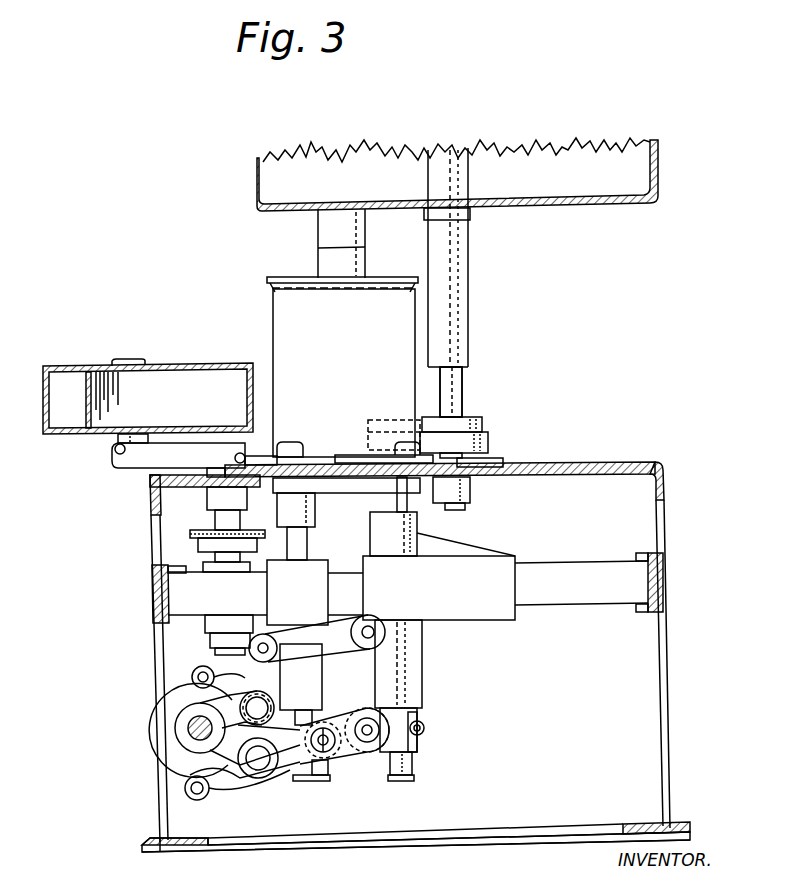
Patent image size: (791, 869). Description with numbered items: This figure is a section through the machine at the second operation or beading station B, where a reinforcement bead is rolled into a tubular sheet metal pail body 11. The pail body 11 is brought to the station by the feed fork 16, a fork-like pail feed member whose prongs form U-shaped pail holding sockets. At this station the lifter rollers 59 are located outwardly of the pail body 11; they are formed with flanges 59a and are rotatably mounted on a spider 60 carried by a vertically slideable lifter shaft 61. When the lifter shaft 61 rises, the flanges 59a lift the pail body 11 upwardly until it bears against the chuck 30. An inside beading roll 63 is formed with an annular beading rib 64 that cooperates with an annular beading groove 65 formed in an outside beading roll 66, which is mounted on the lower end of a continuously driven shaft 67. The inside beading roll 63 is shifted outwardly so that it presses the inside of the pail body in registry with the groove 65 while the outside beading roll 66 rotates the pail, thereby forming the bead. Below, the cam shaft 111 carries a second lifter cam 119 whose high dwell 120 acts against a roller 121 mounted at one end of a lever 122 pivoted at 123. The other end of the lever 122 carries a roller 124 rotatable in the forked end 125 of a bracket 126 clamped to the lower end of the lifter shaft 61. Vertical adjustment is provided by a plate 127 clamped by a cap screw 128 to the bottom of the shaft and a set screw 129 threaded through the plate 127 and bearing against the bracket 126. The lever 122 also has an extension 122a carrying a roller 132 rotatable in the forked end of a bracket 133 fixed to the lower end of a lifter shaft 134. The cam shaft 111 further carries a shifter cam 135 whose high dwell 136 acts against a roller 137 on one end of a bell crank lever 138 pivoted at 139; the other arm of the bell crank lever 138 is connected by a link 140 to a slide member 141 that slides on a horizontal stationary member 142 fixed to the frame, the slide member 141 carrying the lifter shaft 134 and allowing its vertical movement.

The second operation station B is at (190, 308).
The pail body 11 is at (318, 365).
The feed fork 16 is at (74, 360).
The chuck 30 is at (375, 277).
The lifter rollers 59 is at (292, 444).
The flanges 59a is at (350, 455).
The spider 60 is at (330, 496).
The lifter shaft 61 is at (308, 548).
The inside beading roll 63 is at (375, 419).
The annular beading rib 64 is at (397, 430).
The annular beading groove 65 is at (484, 425).
The outside beading roll 66 is at (490, 441).
The continuously driven shaft 67 is at (463, 405).
The cam shaft 111 is at (192, 727).
The second lifter cam 119 is at (197, 737).
The high dwell 120 is at (157, 744).
The roller 121 is at (194, 798).
The lever 122 is at (229, 796).
The extension 122a is at (366, 722).
The pivot 123 is at (268, 767).
The roller 124 is at (340, 724).
The forked end 125 is at (329, 753).
The bracket 126 is at (294, 728).
The plate 127 is at (320, 780).
The cap screw 128 is at (310, 783).
The set screw 129 is at (333, 766).
The roller 132 is at (412, 714).
The bracket 133 is at (418, 744).
The lifter shaft 134 is at (407, 500).
The shifter cam 135 is at (229, 709).
The high dwell 136 is at (269, 733).
The roller 137 is at (196, 672).
The bell crank lever 138 is at (262, 695).
The pivot 139 is at (262, 708).
The link 140 is at (328, 645).
The slide member 141 is at (440, 598).
The horizontal stationary member 142 is at (575, 592).